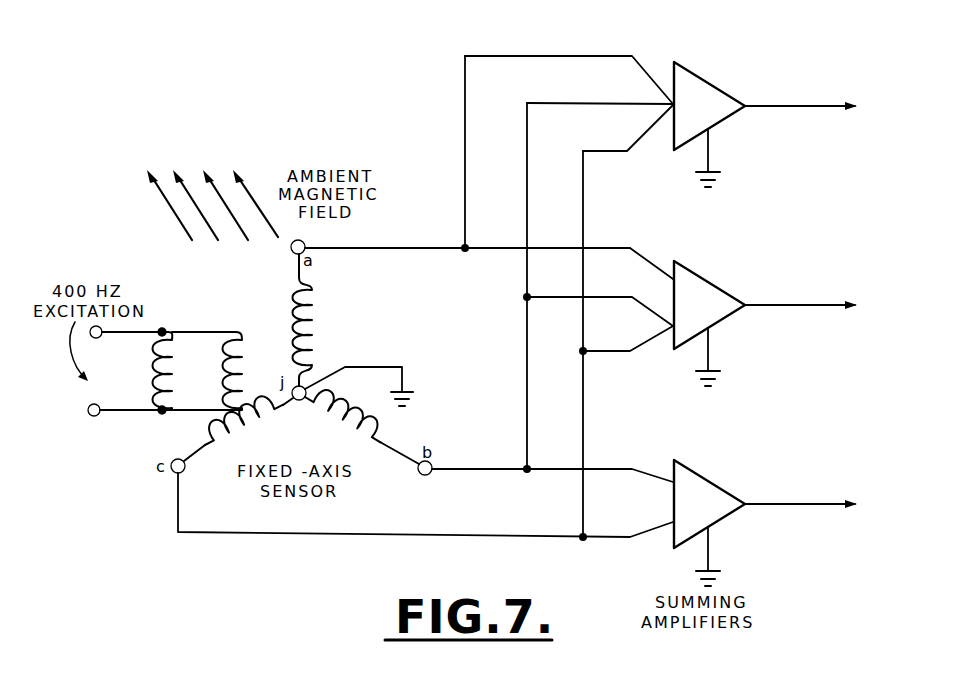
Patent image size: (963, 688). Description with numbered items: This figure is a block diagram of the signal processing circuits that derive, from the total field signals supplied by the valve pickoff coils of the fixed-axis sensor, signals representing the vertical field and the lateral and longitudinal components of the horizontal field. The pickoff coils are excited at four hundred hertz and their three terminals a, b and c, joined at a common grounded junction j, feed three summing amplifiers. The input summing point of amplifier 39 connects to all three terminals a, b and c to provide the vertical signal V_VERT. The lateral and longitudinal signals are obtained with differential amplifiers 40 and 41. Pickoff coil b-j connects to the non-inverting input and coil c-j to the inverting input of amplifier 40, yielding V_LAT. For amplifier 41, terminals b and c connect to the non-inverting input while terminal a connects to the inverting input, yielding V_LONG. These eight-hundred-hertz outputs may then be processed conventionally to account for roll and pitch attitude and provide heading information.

The amplifier 39 is at (707, 75).
The differential amplifier 41 is at (707, 274).
The differential amplifier 40 is at (707, 473).